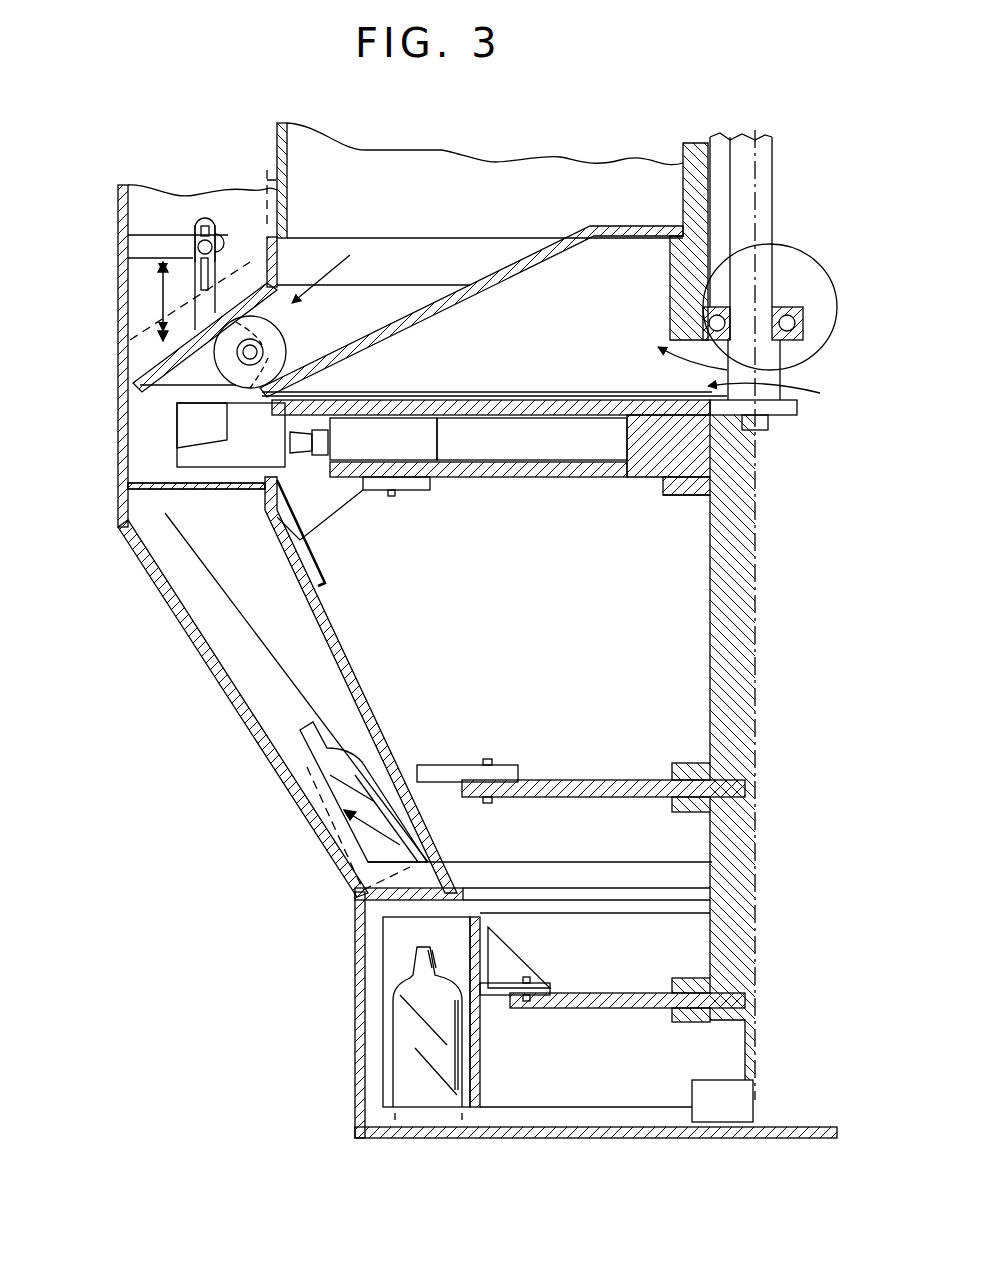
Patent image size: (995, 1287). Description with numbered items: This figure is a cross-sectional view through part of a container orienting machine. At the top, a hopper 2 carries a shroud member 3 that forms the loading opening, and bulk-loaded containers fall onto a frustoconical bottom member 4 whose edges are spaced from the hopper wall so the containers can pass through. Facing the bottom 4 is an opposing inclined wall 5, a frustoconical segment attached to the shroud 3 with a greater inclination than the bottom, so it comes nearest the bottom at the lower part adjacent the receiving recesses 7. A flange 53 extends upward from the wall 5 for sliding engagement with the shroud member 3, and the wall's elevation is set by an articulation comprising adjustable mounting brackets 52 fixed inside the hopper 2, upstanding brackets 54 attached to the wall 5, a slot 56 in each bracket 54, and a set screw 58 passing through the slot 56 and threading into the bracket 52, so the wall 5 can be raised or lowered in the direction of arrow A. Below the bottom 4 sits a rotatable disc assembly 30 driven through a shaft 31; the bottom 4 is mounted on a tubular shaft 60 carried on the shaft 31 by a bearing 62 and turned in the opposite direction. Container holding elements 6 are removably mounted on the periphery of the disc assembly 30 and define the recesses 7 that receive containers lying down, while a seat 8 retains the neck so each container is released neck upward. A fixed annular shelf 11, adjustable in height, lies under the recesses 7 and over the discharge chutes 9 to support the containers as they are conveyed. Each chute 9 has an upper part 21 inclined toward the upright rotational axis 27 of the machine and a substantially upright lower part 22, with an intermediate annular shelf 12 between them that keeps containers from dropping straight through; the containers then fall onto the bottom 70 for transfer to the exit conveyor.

The hopper 2 is at (118, 213).
The shroud member 3 is at (452, 162).
The bottom member 4 is at (408, 313).
The inclined wall 5 is at (260, 287).
The container holding element 6 is at (205, 452).
The recess 7 is at (145, 455).
The seat 8 is at (190, 418).
The discharge and guiding chute 9 is at (237, 628).
The annular shelf 11 is at (165, 490).
The intermediate annular shelf 12 is at (372, 902).
The upper chute part 21 is at (268, 705).
The lower chute part 22 is at (383, 1020).
The rotational axis 27 is at (757, 718).
The rotatable disc assembly 30 is at (520, 418).
The shaft 31 is at (770, 365).
The adjustable mounting bracket 52 is at (140, 245).
The flange 53 is at (270, 227).
The upstanding bracket 54 is at (199, 262).
The slot 56 is at (199, 283).
The set screw 58 is at (217, 235).
The tubular shaft 60 is at (683, 200).
The bearing 62 is at (795, 305).
The bottom 70 is at (640, 1140).
The arrow A is at (160, 300).